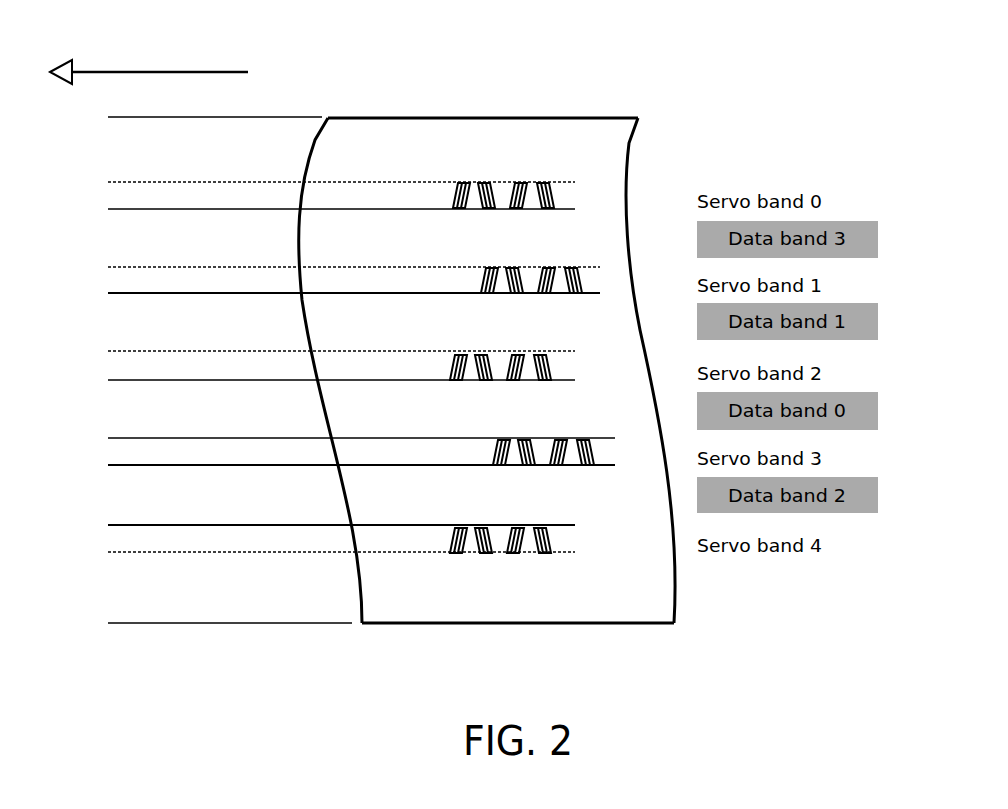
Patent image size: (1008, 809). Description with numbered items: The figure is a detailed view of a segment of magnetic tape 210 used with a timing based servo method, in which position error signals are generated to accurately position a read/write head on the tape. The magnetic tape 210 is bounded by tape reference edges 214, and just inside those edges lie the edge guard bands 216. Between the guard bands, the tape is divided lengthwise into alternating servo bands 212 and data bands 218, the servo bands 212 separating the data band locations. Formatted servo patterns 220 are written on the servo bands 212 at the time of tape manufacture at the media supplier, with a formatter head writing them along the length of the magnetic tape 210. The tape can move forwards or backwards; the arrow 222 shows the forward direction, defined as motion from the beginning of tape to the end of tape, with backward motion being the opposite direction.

The magnetic tape 210 is at (521, 74).
The servo bands 212 is at (361, 367).
The tape reference edges 214 is at (363, 117).
The edge guard bands 216 is at (230, 370).
The data bands 218 is at (354, 370).
The formatted servo patterns 220 is at (565, 192).
The arrow 222 is at (236, 75).